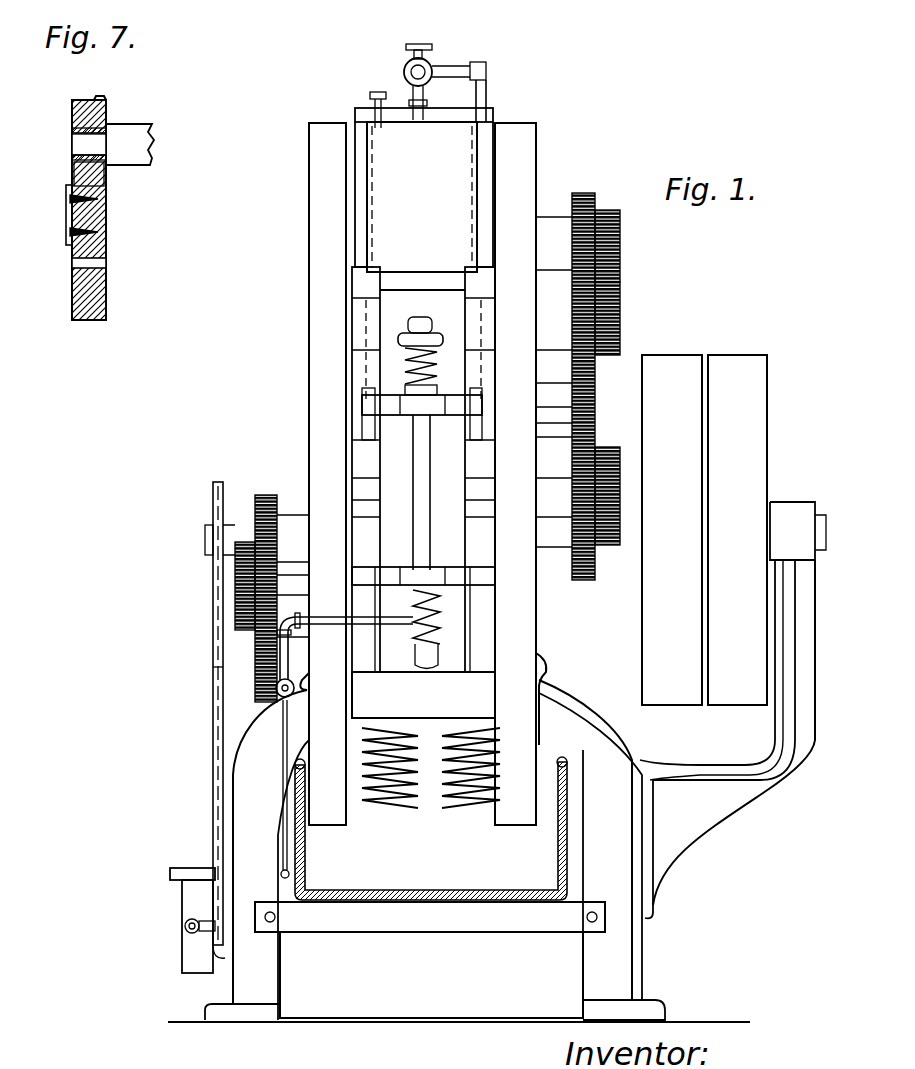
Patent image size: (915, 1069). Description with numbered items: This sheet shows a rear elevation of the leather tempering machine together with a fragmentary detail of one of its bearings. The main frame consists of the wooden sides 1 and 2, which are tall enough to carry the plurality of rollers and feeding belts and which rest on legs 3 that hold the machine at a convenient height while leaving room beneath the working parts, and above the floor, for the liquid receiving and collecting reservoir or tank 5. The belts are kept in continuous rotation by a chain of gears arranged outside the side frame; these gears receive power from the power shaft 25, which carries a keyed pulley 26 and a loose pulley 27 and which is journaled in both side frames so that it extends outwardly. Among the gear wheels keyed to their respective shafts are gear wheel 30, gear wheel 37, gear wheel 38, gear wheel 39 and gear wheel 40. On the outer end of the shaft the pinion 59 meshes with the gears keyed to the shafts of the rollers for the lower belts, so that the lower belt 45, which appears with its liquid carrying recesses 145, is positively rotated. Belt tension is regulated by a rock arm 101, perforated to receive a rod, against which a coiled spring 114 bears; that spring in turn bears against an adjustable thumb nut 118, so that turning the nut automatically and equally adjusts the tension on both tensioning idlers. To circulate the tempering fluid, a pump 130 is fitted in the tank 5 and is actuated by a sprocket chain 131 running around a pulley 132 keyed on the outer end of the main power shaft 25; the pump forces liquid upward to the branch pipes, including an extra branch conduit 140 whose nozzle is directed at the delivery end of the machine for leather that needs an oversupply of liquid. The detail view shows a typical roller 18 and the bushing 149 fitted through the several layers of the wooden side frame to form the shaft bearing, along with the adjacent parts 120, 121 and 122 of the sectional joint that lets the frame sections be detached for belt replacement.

In FIG. 7, the wooden side 1 is at (70, 306).
In FIG. 1, the wooden side 1 is at (515, 168).
In FIG. 1, the wooden side 2 is at (309, 233).
In FIG. 1, the leg 3 is at (250, 985).
In FIG. 1, the liquid receiving and collecting reservoir or tank 5 is at (470, 895).
In FIG. 7, the roller 18 is at (130, 135).
In FIG. 1, the power shaft 25 is at (238, 548).
In FIG. 1, the keyed pulley 26 is at (668, 362).
In FIG. 1, the loose pulley 27 is at (748, 362).
In FIG. 1, the gear wheel 30 is at (584, 578).
In FIG. 1, the gear wheel 37 is at (588, 191).
In FIG. 1, the gear wheel 38 is at (621, 227).
In FIG. 1, the gear wheel 39 is at (621, 310).
In FIG. 1, the gear wheel 40 is at (611, 447).
In FIG. 1, the lower belt 45 is at (427, 812).
In FIG. 1, the pinion 59 is at (265, 496).
In FIG. 1, the rock arm 101 is at (385, 402).
In FIG. 1, the coiled spring 114 is at (405, 362).
In FIG. 1, the adjustable thumb nut 118 is at (400, 338).
In FIG. 7, the sleeve 120 is at (73, 172).
In FIG. 7, the plate 121 is at (70, 218).
In FIG. 7, the pin 122 is at (68, 197).
In FIG. 1, the pump 130 is at (190, 903).
In FIG. 1, the sprocket chain 131 is at (213, 667).
In FIG. 1, the pulley 132 is at (213, 483).
In FIG. 1, the extra branch conduit 140 is at (290, 727).
In FIG. 1, the liquid carrying recesses 145 is at (382, 792).
In FIG. 7, the bushing 149 is at (72, 129).